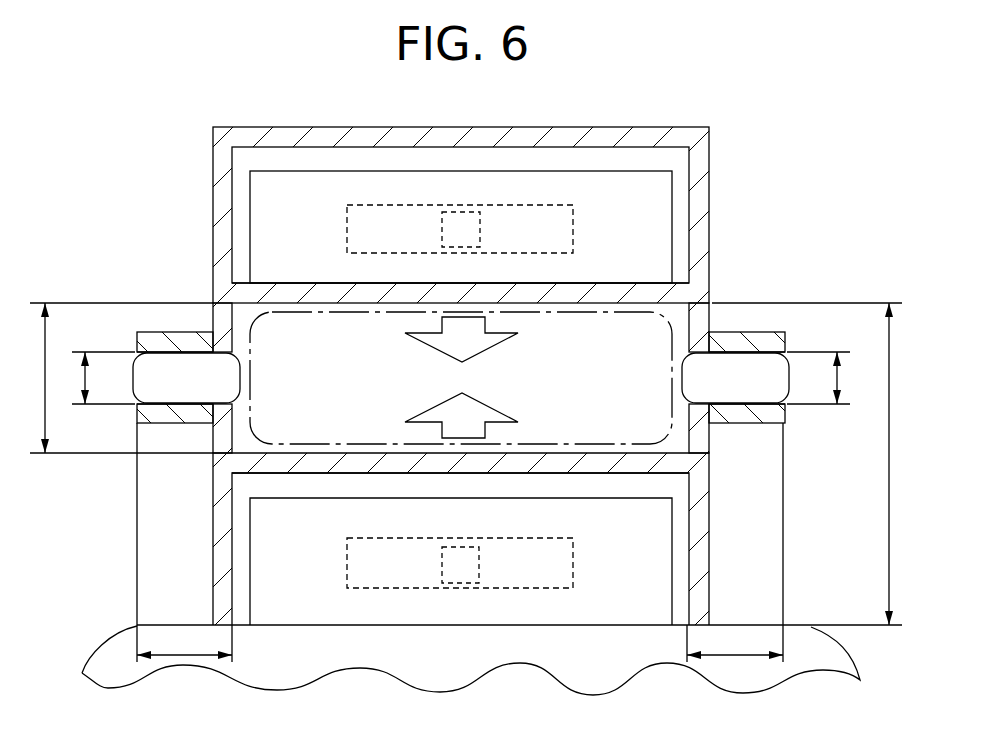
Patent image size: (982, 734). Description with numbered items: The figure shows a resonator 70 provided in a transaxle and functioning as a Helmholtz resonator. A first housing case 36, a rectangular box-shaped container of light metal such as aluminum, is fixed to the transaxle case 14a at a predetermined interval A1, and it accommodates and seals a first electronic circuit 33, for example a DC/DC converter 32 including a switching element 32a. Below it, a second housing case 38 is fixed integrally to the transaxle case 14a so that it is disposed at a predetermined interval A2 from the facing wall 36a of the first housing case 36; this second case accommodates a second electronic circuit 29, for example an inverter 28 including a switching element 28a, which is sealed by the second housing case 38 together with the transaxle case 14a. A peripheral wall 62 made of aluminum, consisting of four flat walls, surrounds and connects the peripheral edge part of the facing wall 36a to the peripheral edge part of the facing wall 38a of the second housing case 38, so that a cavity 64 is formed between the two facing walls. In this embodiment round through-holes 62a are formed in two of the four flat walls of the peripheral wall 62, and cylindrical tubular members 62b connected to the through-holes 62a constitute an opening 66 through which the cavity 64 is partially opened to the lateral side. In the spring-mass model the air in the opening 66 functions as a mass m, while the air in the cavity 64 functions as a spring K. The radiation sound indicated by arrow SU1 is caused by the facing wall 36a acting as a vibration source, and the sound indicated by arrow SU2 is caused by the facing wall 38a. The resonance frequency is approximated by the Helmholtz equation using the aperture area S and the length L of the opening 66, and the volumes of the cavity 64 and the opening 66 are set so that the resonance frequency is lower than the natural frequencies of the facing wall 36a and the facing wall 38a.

The first housing case 36 is at (692, 111).
The first electronic circuit 33 is at (285, 193).
The DC/DC converter 32 is at (360, 220).
The switching element 32a is at (443, 238).
The facing wall 36a is at (467, 293).
The second housing case 38 is at (195, 541).
The facing wall 38a is at (537, 463).
The second electronic circuit 29 is at (287, 590).
The inverter 28 is at (411, 594).
The switching element 28a is at (460, 577).
The peripheral wall 62 is at (734, 325).
The through-holes 62a is at (152, 360).
The tubular members 62b is at (165, 343).
The opening 66 is at (153, 384).
The mass m is at (460, 377).
The resonator 70 is at (96, 337).
The cavity 64 is at (348, 440).
The arrow SU1 is at (477, 343).
The arrow SU2 is at (443, 408).
The spring K is at (461, 378).
The predetermined interval A2 is at (110, 378).
The predetermined interval A1 is at (909, 464).
The aperture area S is at (459, 378).
The length L is at (460, 643).
The transaxle case 14a is at (117, 655).